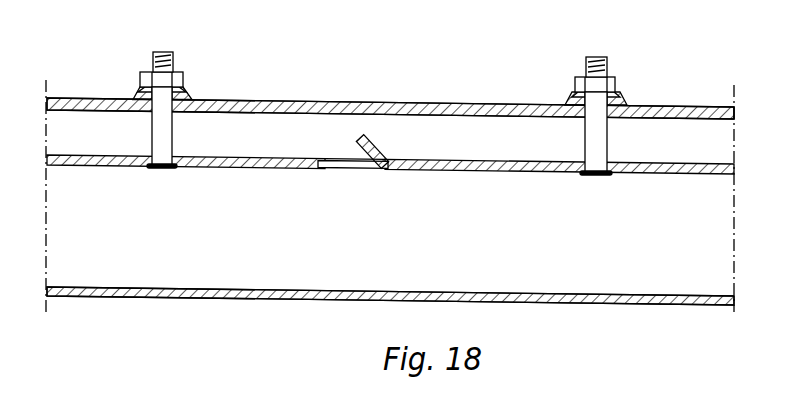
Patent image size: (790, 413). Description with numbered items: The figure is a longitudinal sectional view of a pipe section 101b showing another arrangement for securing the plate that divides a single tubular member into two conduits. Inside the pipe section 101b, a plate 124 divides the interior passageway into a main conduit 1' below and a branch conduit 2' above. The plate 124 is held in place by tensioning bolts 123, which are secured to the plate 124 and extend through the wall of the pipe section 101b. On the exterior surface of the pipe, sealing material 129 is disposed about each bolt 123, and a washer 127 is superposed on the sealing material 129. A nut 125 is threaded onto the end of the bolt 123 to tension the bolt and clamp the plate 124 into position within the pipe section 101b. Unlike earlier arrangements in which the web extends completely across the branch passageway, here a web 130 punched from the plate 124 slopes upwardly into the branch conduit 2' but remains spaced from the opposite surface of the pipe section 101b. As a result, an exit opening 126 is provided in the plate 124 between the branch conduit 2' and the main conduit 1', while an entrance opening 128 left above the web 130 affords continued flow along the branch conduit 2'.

The tensioning bolt 123 is at (170, 53).
The plate 124 is at (222, 165).
The nut 125 is at (182, 82).
The exit opening 126 is at (340, 165).
The washer 127 is at (142, 96).
The entrance opening 128 is at (362, 123).
The sealing material 129 is at (132, 96).
The web 130 is at (370, 166).
The branch conduit 2' is at (390, 91).
The main conduit 1' is at (390, 320).
The pipe section 101b is at (180, 298).